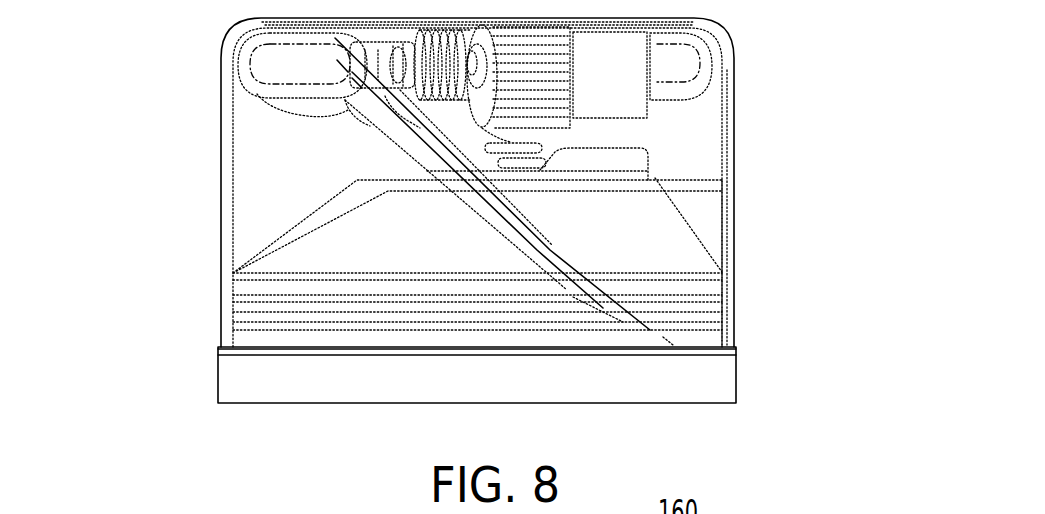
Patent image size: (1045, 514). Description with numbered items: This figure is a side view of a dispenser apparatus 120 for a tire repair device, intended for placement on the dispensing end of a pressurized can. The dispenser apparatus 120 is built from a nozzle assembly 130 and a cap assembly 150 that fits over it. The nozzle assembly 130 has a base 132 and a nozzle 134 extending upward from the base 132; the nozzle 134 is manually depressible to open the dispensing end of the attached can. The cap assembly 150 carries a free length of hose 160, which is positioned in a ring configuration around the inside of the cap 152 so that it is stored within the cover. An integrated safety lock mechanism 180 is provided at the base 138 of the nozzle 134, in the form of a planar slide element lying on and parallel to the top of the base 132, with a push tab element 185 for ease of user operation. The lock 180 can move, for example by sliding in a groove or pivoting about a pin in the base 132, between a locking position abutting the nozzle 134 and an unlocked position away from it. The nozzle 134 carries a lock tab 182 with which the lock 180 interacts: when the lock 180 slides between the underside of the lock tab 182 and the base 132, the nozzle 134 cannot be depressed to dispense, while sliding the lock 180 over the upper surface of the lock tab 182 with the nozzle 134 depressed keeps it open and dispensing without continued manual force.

The dispenser apparatus 120 is at (838, 284).
The nozzle assembly 130 is at (200, 370).
The base 132 is at (737, 373).
The nozzle 134 is at (393, 120).
The base of the nozzle 138 is at (415, 172).
The cap assembly 150 is at (748, 70).
The cap 152 is at (734, 252).
The hose 160 is at (232, 46).
The safety lock mechanism 180 is at (622, 165).
The lock tab 182 is at (537, 165).
The push tab element 185 is at (648, 162).